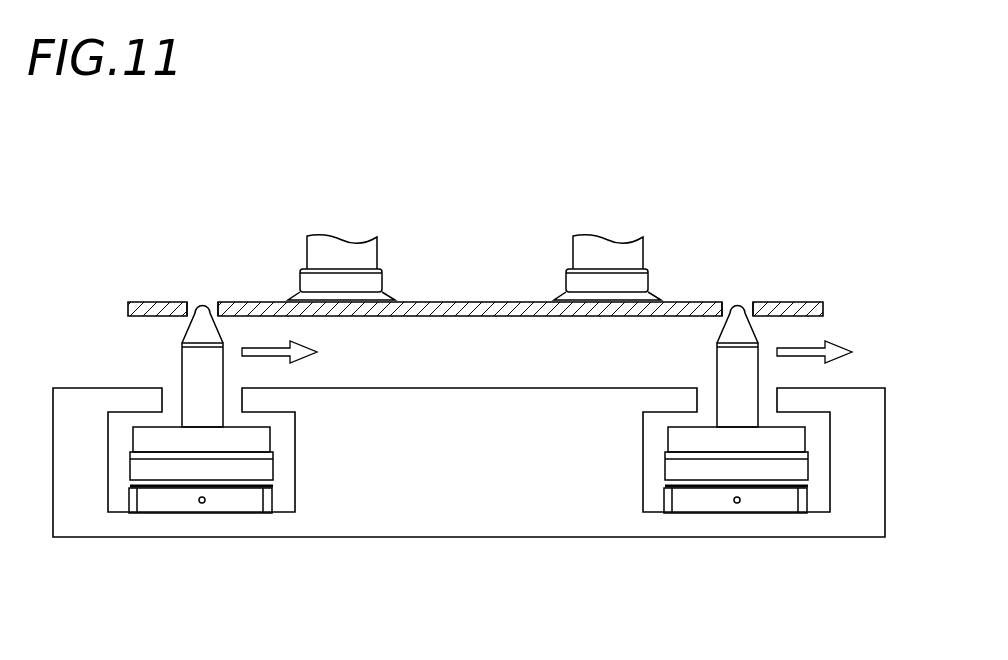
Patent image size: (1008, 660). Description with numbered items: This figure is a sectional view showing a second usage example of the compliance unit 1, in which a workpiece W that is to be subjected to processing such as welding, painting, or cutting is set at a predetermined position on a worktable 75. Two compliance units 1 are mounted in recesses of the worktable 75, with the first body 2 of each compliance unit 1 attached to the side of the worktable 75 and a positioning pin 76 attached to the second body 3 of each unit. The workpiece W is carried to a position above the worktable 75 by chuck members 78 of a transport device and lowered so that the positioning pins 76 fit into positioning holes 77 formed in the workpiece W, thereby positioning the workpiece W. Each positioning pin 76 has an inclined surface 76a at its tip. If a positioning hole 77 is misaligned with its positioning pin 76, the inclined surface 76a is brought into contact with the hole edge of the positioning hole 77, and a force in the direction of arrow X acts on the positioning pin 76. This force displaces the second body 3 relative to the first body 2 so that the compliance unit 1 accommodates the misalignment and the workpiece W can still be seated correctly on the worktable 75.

The compliance unit 1 is at (179, 493).
The first body 2 is at (145, 472).
The second body 3 is at (142, 442).
The worktable 75 is at (475, 503).
The positioning pin 76 is at (202, 378).
The inclined surface 76a is at (187, 325).
The positioning hole 77 is at (218, 312).
The chuck member 78 is at (340, 255).
The workpiece W is at (470, 310).
The arrow X is at (558, 354).